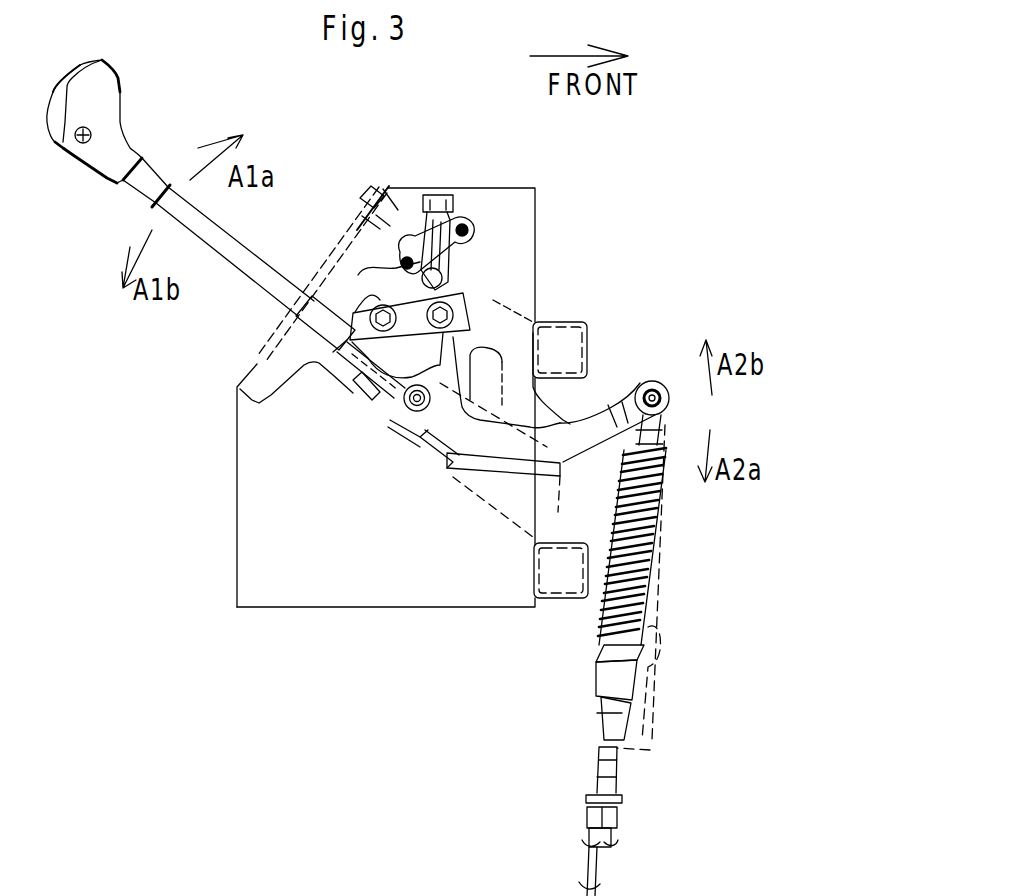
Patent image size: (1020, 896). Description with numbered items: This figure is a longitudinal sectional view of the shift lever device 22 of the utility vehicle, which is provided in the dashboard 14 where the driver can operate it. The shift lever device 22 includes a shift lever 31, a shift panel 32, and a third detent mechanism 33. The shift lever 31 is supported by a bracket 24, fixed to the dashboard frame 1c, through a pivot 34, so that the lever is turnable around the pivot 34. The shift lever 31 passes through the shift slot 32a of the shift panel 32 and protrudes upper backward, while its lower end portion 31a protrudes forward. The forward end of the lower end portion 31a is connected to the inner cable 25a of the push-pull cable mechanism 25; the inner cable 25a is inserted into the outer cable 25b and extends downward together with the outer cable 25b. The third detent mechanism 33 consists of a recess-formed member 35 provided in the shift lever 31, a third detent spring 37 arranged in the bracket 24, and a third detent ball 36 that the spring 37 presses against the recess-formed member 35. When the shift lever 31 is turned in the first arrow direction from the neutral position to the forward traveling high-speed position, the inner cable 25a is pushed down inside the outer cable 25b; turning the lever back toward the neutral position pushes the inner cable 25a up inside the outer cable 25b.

The shift lever device 22 is at (331, 151).
The shift lever 31 is at (240, 262).
The lower end portion 31a is at (606, 402).
The shift panel 32 is at (252, 372).
The shift slot 32a is at (332, 292).
The third detent mechanism 33 is at (507, 255).
The pivot 34 is at (398, 408).
The recess-formed member 35 is at (455, 300).
The third detent ball 36 is at (470, 232).
The third detent spring 37 is at (426, 212).
The dashboard 14 is at (470, 188).
The dashboard frame 1c is at (588, 343).
The bracket 24 is at (489, 512).
The push-pull cable mechanism 25 is at (564, 722).
The inner cable 25a is at (596, 875).
The outer cable 25b is at (604, 837).